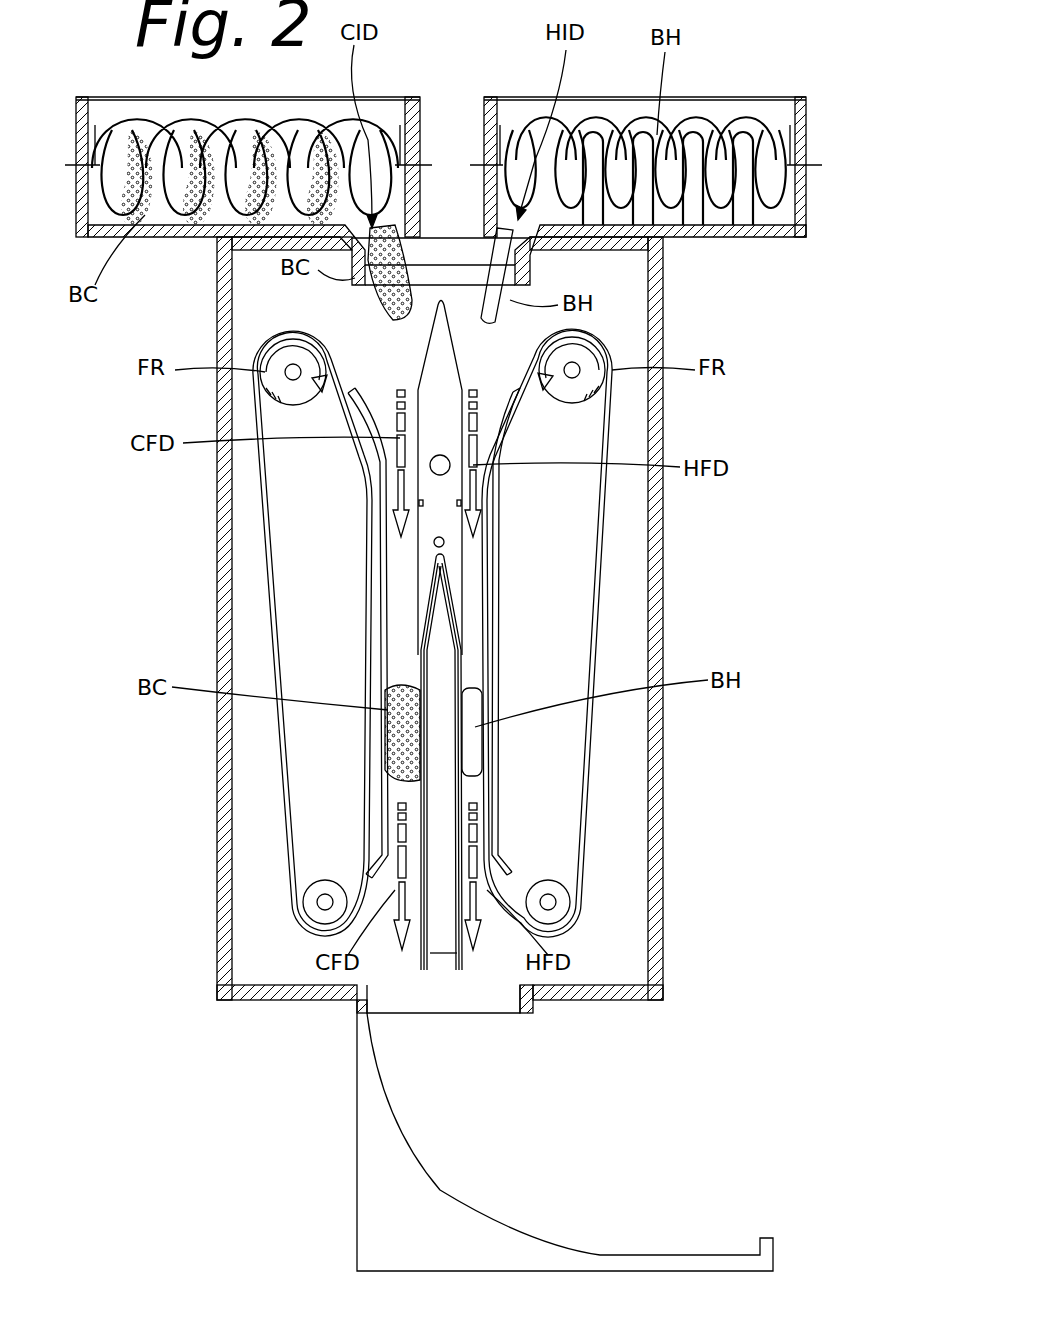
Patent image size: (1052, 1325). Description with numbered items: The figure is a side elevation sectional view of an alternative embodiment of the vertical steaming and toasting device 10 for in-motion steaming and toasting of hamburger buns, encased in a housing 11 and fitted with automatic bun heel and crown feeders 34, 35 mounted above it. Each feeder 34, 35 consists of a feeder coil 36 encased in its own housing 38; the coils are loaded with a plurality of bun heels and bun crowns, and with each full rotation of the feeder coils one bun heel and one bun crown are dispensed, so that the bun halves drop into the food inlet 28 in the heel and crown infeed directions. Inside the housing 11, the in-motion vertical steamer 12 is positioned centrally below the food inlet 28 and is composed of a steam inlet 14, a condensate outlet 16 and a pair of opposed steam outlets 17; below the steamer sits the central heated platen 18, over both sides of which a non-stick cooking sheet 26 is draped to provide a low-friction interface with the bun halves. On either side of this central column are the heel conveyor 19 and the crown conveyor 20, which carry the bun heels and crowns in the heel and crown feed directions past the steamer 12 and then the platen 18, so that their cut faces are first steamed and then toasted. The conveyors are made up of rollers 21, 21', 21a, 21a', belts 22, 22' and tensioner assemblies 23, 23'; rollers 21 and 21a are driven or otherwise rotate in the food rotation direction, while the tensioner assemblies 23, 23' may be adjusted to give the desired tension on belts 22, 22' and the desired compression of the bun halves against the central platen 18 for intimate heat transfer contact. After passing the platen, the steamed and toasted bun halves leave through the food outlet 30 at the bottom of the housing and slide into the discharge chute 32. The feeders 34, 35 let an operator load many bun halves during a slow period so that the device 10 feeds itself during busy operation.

The vertical steaming and toasting device 10 is at (190, 1012).
The housing 11 is at (222, 300).
The in-motion vertical steamer 12 is at (428, 375).
The steam inlet 14 is at (430, 465).
The condensate outlet 16 is at (436, 546).
The steam outlets 17 is at (457, 503).
The central heated platen 18 is at (494, 762).
The heel conveyor 19 is at (607, 623).
The crown conveyor 20 is at (261, 624).
The roller 21 is at (589, 344).
The roller 21a is at (283, 345).
The roller 21' is at (581, 920).
The roller 21a' is at (301, 921).
The belt 22 is at (607, 633).
The belt 22' is at (253, 633).
The tensioner assembly 23 is at (527, 631).
The tensioner assembly 23' is at (350, 633).
The non-stick cooking sheet 26 is at (466, 793).
The food inlet 28 is at (447, 222).
The food outlet 30 is at (484, 1014).
The discharge chute 32 is at (458, 1200).
The automatic bun heel feeder 34 is at (668, 173).
The automatic bun crown feeder 35 is at (113, 80).
The feeder coil 36 is at (770, 212).
The housing 38 is at (806, 110).